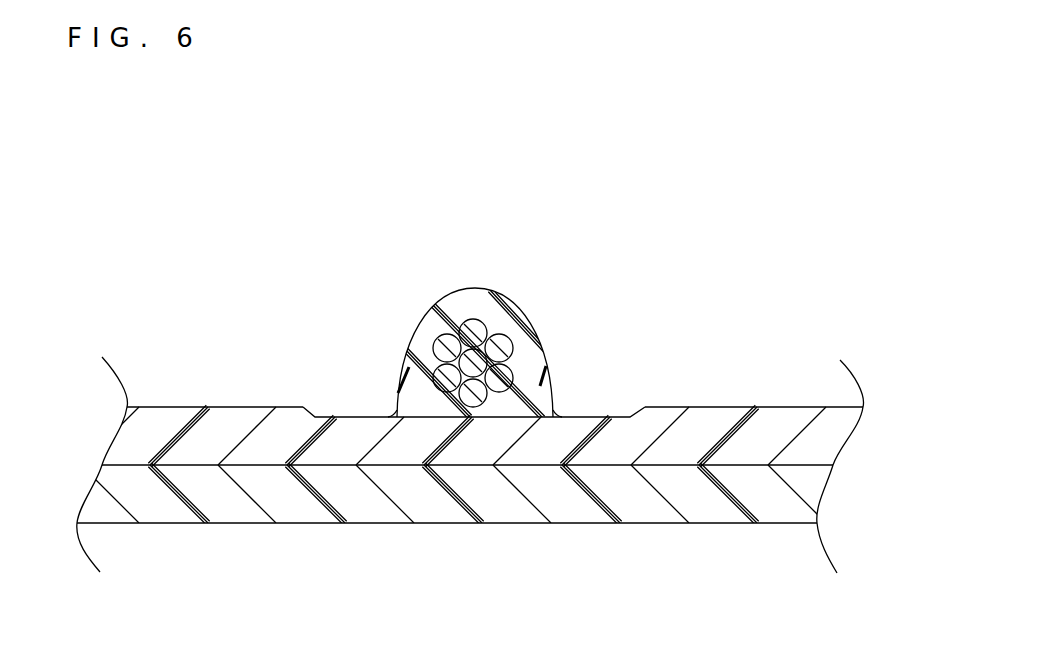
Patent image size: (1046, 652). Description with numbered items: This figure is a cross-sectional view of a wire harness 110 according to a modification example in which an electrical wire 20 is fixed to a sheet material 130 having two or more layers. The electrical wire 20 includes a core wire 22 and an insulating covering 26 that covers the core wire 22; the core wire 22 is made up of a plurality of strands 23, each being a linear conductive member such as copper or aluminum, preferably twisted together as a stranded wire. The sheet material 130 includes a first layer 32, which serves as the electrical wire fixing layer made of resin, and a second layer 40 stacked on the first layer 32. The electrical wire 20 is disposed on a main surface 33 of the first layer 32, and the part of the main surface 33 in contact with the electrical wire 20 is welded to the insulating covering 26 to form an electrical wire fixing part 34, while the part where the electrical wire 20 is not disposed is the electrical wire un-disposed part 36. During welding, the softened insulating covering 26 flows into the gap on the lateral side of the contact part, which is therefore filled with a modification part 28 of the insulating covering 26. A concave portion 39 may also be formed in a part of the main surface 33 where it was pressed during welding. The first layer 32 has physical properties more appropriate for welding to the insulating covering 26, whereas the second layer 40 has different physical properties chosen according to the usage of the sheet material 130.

The wire harness 110 is at (213, 183).
The electrical wire 20 is at (512, 214).
The insulating covering 26 is at (440, 297).
The core wire 22 is at (532, 248).
The strand 23 is at (474, 321).
The modification part 28 is at (397, 384).
The main surface 33 is at (249, 406).
The electrical wire fixing part 34 is at (440, 470).
The electrical wire un-disposed part 36 is at (780, 424).
The concave portion 39 is at (613, 416).
The first layer 32 is at (832, 445).
The second layer 40 is at (805, 494).
The sheet material 130 is at (900, 427).